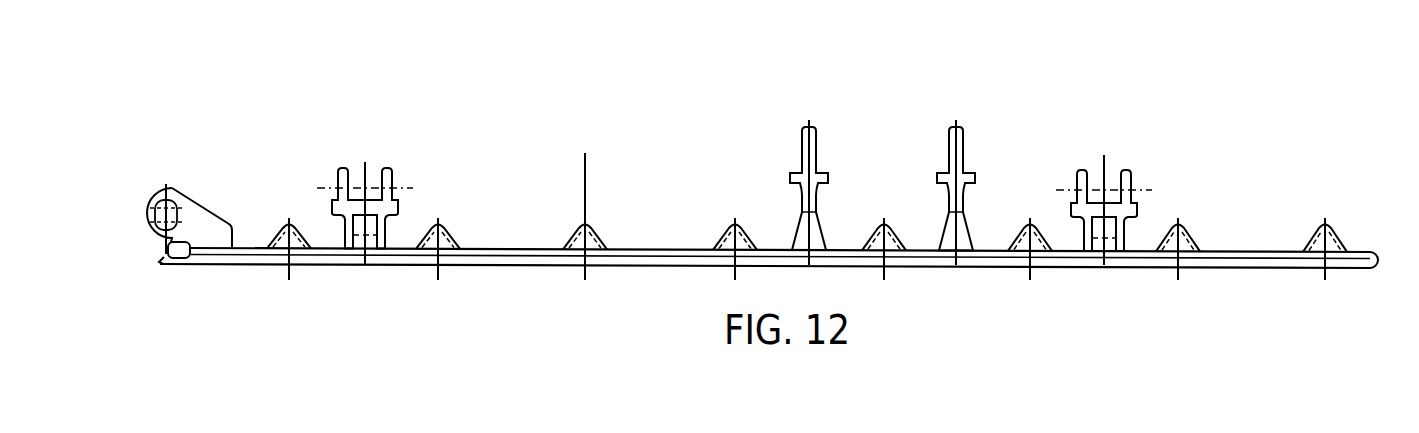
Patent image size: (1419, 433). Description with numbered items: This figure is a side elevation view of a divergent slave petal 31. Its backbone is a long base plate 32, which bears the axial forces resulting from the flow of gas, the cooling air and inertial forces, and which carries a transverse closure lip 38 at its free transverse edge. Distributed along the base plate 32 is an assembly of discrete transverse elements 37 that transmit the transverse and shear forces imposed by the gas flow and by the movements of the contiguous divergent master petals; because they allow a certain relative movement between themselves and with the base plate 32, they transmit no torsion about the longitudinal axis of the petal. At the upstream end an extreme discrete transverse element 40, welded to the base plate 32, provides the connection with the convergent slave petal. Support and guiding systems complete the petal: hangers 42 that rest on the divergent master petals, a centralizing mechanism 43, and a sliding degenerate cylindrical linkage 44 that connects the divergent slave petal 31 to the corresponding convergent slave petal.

The divergent slave petal 31 is at (920, 105).
The base plate 32 is at (1214, 269).
The discrete transverse elements 37 is at (722, 225).
The transverse closure lip 38 is at (1374, 254).
The extreme discrete transverse element 40 is at (282, 228).
The hangers 42 is at (389, 170).
The centralizing mechanism 43 is at (952, 145).
The sliding degenerate cylindrical linkage 44 is at (169, 189).